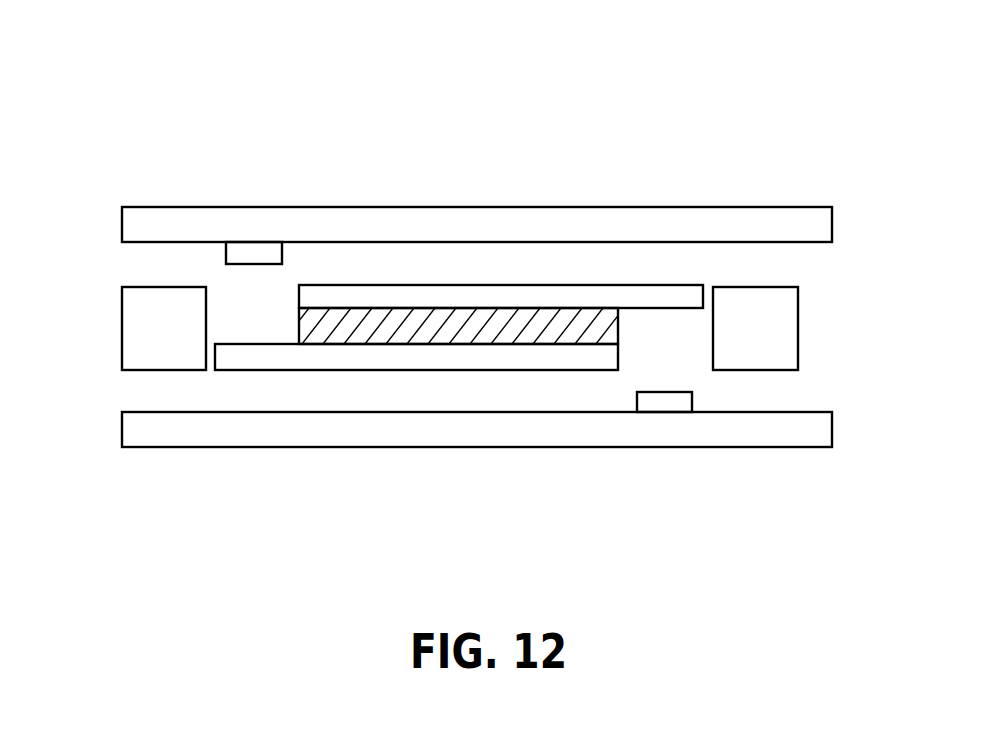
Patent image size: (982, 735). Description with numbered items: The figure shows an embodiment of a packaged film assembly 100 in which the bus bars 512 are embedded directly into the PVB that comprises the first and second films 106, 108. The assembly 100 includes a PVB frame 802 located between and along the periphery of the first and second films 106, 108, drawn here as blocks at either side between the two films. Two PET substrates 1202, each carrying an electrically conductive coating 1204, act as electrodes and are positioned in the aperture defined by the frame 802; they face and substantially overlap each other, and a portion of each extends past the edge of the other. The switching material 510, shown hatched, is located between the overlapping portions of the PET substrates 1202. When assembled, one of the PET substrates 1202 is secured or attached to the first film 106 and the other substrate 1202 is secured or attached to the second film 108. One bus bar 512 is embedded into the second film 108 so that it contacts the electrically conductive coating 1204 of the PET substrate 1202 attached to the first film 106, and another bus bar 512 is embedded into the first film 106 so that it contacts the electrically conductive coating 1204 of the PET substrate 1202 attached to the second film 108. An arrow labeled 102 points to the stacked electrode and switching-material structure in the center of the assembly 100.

The packaged film assembly 100 is at (730, 86).
The device under test assembly 102 is at (465, 336).
The first film 106 is at (188, 447).
The second film 108 is at (188, 207).
The switching material 510 is at (460, 312).
The bus bar 512 is at (247, 264).
The PVB frame 802 is at (122, 325).
The PET substrate 1202 is at (535, 285).
The electrically conductive coating 1204 is at (661, 324).